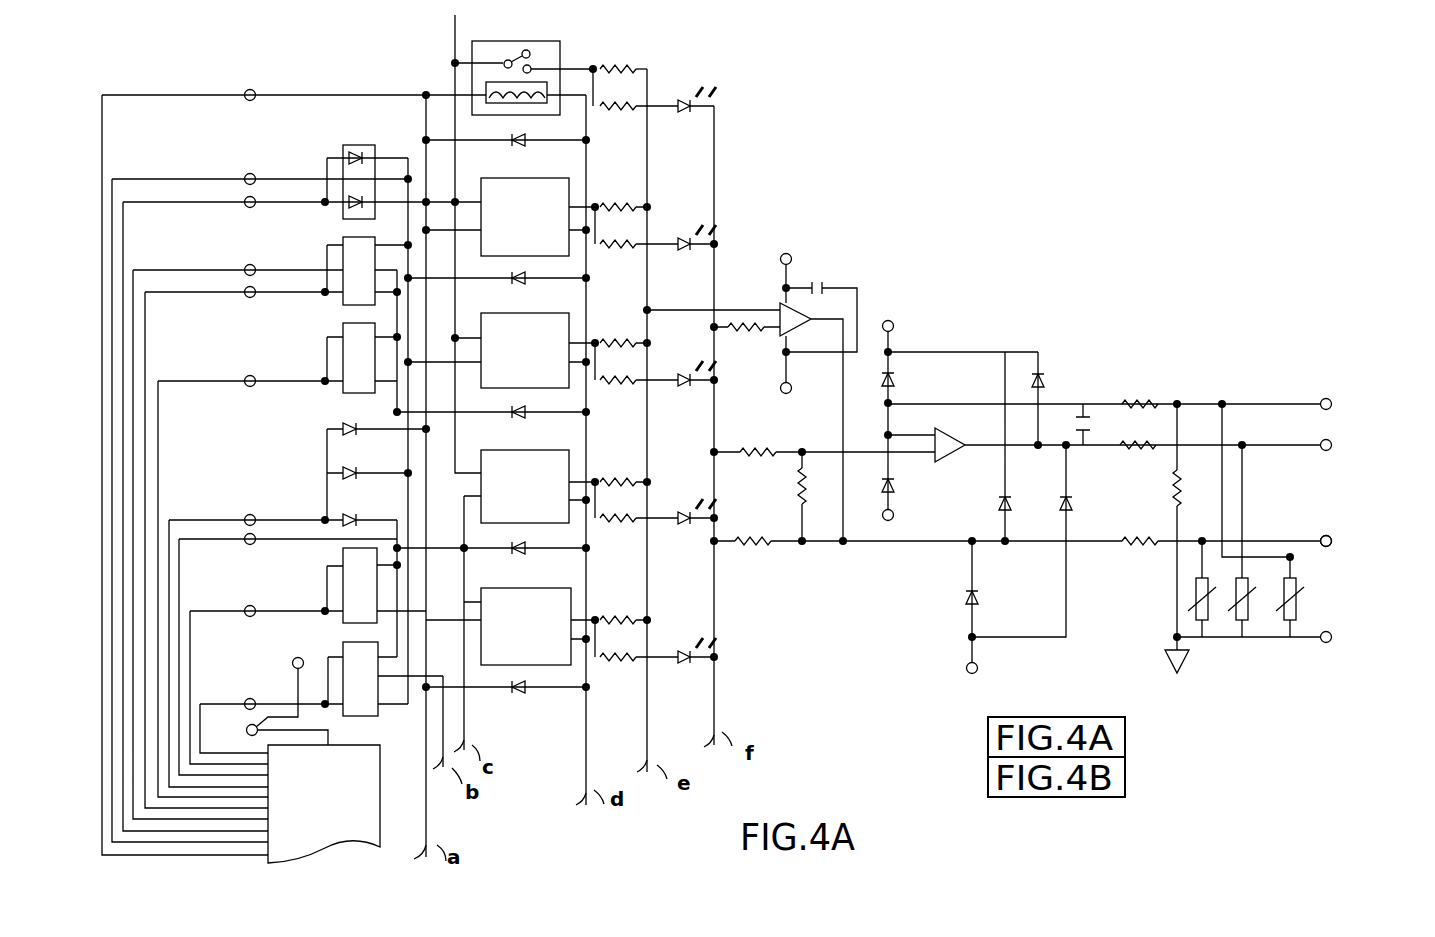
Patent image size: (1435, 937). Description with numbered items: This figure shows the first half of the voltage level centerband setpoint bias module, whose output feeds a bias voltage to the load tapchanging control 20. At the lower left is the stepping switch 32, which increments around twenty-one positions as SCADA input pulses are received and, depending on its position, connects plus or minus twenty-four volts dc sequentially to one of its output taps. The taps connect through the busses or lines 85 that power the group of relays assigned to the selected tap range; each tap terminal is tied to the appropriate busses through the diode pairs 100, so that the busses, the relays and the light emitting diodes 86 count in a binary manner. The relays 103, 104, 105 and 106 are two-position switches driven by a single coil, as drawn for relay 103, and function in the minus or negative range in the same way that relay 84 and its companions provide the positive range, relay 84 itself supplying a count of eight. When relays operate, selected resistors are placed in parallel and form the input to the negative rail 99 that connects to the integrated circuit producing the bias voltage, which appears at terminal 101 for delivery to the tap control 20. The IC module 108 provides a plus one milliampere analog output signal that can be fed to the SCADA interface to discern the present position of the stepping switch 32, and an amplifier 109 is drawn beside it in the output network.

The load tapchanging control 20 is at (1231, 536).
The stepping switch 32 is at (362, 745).
The relay 84 is at (524, 590).
The busses or lines 85 is at (186, 687).
The light emitting diodes 86 is at (672, 128).
The negative rail (lead) 99 is at (651, 591).
The diode pairs 100 is at (336, 238).
The terminal 101 is at (1332, 544).
The relay 103 is at (562, 60).
The relay 104 is at (519, 178).
The relay 105 is at (516, 313).
The relay 106 is at (517, 450).
The IC module 108 is at (944, 430).
The amplifier 109 is at (752, 400).